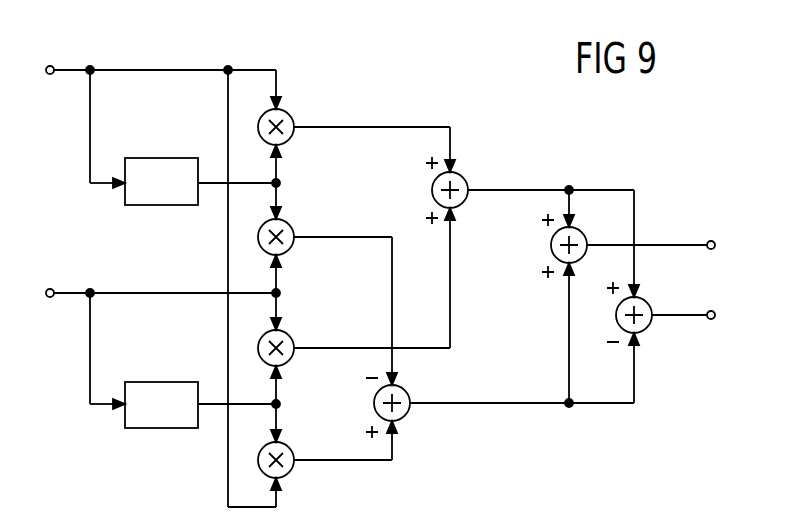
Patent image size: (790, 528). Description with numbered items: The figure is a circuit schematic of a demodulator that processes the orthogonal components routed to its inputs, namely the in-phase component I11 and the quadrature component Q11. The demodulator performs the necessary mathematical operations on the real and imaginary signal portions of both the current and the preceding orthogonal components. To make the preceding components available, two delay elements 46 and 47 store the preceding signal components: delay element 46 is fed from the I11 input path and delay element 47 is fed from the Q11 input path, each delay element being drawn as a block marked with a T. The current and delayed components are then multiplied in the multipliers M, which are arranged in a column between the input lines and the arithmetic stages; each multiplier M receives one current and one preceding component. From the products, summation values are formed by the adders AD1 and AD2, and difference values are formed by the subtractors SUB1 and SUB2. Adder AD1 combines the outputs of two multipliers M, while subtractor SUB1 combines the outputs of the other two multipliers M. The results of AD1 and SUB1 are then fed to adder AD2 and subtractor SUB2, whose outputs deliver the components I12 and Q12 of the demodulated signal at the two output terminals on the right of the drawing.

The delay element 46 is at (162, 158).
The delay element 47 is at (162, 382).
The multiplier M is at (292, 286).
The adder AD1 is at (530, 190).
The adder AD2 is at (605, 234).
The subtractor SUB1 is at (502, 354).
The subtractor SUB2 is at (661, 281).
The orthogonal component I11 is at (103, 58).
The orthogonal component Q11 is at (103, 273).
The component of the demodulated signal I12 is at (740, 224).
The component of the demodulated signal Q12 is at (740, 304).